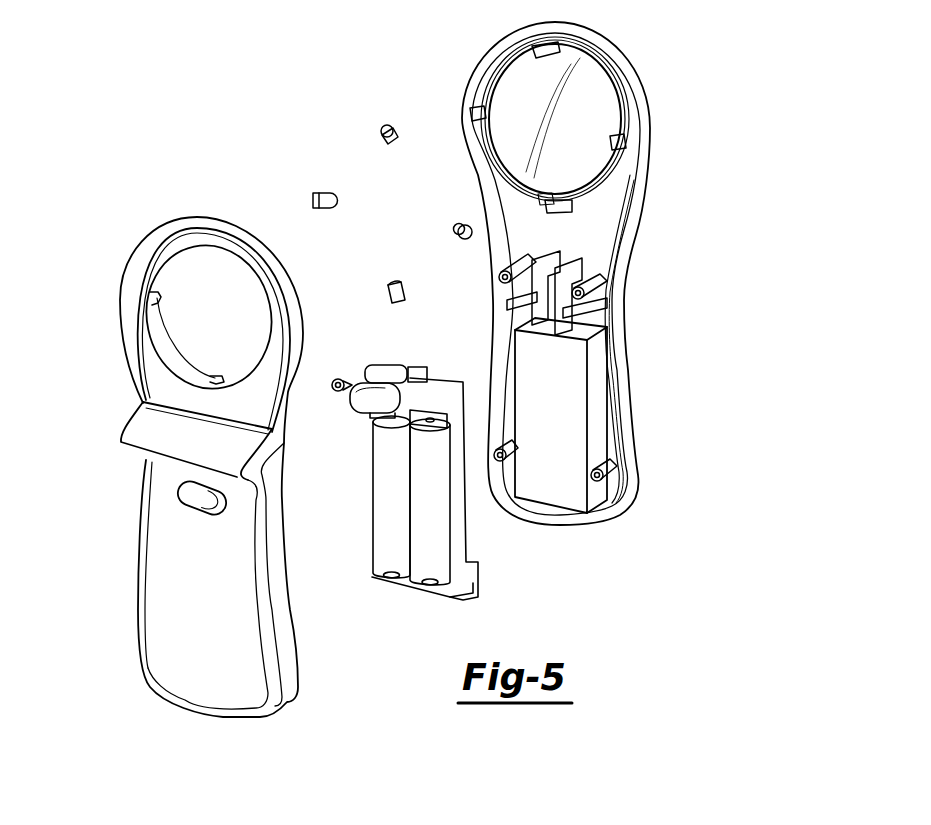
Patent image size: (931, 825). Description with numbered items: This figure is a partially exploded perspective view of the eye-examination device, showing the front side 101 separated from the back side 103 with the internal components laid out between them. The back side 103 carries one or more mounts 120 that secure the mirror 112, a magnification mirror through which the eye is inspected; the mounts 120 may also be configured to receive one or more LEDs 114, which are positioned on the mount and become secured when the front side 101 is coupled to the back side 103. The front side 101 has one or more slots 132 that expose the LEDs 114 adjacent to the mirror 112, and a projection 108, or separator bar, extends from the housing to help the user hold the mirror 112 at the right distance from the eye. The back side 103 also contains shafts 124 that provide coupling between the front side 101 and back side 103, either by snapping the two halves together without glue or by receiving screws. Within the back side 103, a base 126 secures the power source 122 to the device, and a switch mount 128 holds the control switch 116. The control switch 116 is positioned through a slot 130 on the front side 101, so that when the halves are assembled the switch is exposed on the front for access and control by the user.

The front side 101 is at (170, 635).
The back side 103 is at (628, 380).
The projection 108 is at (135, 443).
The mirror 112 is at (592, 106).
The LEDs 114 is at (383, 138).
The control switch 116 is at (365, 395).
The mounts 120 is at (600, 133).
The power source 122 is at (435, 540).
The shafts 124 is at (610, 477).
The base 126 is at (572, 423).
The switch mount 128 is at (583, 307).
The slot 130 is at (203, 497).
The slots 132 is at (157, 298).